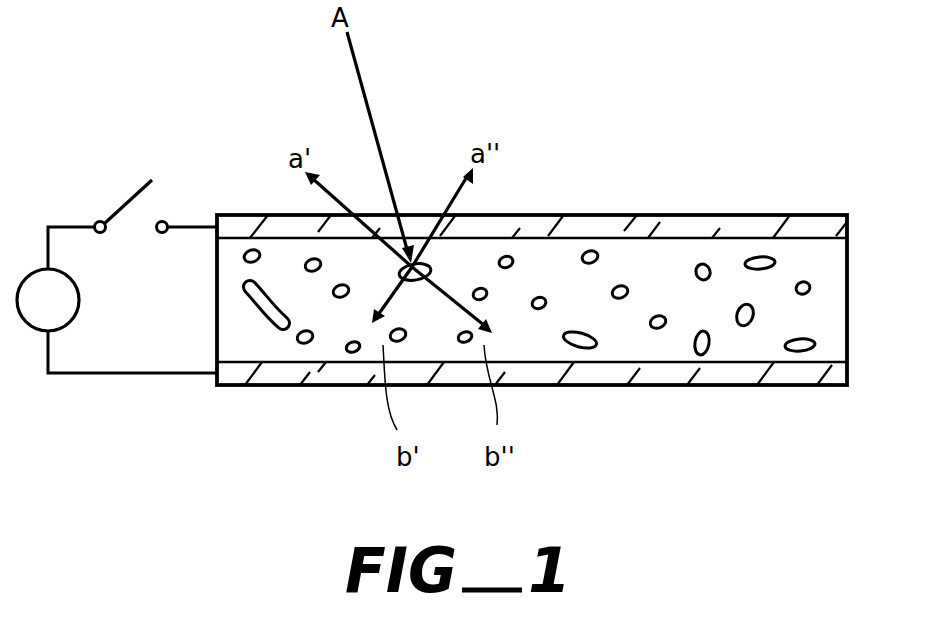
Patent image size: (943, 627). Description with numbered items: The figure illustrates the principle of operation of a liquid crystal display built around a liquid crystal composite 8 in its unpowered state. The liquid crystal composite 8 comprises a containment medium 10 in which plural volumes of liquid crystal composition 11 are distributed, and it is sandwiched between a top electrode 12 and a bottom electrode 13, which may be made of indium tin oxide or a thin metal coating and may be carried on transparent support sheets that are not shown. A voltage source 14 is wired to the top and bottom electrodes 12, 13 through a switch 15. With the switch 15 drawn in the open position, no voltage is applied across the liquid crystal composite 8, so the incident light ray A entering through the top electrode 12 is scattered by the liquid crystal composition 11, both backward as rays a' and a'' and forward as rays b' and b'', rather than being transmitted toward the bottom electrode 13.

The liquid crystal composite 8 is at (532, 301).
The containment medium 10 is at (624, 256).
The liquid crystal composition 11 is at (658, 329).
The top electrode 12 is at (772, 218).
The bottom electrode 13 is at (785, 372).
The voltage source 14 is at (66, 331).
The switch 15 is at (128, 204).